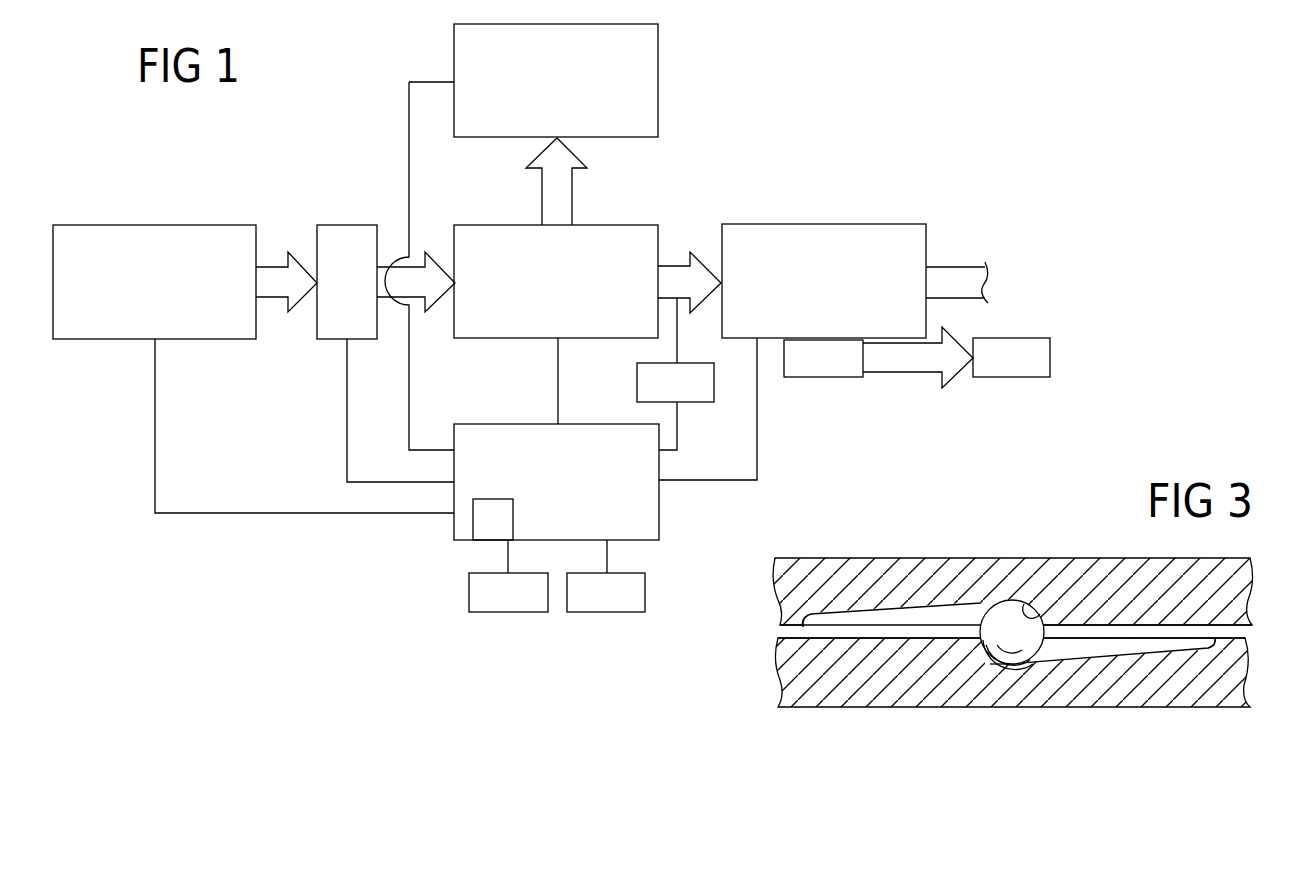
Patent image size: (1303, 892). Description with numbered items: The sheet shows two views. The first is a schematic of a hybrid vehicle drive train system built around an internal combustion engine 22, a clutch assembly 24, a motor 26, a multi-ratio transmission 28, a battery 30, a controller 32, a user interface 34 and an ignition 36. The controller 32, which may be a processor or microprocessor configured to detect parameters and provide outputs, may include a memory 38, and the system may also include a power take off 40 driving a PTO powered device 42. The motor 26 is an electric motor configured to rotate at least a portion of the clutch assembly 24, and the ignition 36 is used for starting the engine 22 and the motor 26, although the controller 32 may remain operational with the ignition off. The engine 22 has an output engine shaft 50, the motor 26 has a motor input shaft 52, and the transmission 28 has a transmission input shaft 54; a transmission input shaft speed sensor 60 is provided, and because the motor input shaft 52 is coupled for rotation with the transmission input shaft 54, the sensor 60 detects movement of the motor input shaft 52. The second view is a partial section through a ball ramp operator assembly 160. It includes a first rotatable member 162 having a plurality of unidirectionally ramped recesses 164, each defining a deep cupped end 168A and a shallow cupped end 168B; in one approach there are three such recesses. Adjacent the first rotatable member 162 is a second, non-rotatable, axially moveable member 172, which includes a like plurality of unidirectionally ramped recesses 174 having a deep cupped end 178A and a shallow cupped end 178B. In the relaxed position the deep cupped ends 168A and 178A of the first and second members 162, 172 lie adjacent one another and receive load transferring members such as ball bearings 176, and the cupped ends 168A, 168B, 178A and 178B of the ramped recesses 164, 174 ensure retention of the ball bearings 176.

In FIG. 1, the internal combustion engine 22 is at (140, 293).
In FIG. 1, the clutch assembly 24 is at (334, 293).
In FIG. 1, the motor 26 is at (544, 293).
In FIG. 1, the multi-ratio transmission 28 is at (810, 293).
In FIG. 1, the battery 30 is at (543, 93).
In FIG. 1, the controller 32 is at (544, 494).
In FIG. 1, the user interface 34 is at (593, 604).
In FIG. 1, the ignition 36 is at (495, 604).
In FIG. 1, the memory 38 is at (505, 533).
In FIG. 1, the power take off (PTO) 40 is at (810, 369).
In FIG. 1, the PTO powered device 42 is at (999, 369).
In FIG. 1, the output engine shaft 50 is at (272, 277).
In FIG. 1, the motor input shaft 52 is at (440, 285).
In FIG. 1, the transmission input shaft 54 is at (675, 277).
In FIG. 1, the transmission input shaft speed sensor 60 is at (662, 394).
In FIG. 3, the ball ramp operator assembly 160 is at (1035, 523).
In FIG. 3, the first rotatable member 162 is at (907, 565).
In FIG. 3, the unidirectionally ramped recesses 164 is at (933, 610).
In FIG. 3, the deep cupped end 168A is at (1032, 610).
In FIG. 3, the shallow cupped end 168B is at (803, 627).
In FIG. 3, the second axially moveable member 172 is at (1088, 697).
In FIG. 3, the unidirectionally ramped recesses 174 is at (1087, 652).
In FIG. 3, the ball bearings 176 is at (982, 645).
In FIG. 3, the deep cupped end 178A is at (985, 640).
In FIG. 3, the shallow cupped end 178B is at (1213, 648).